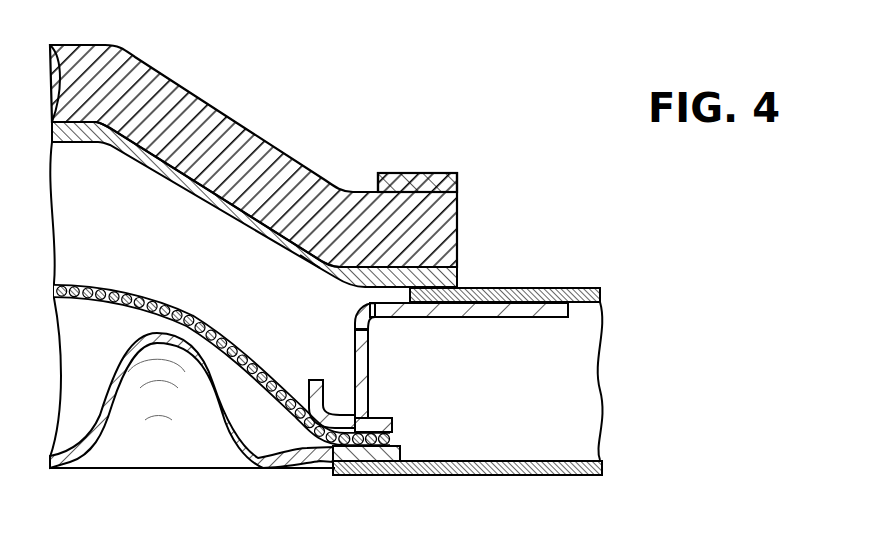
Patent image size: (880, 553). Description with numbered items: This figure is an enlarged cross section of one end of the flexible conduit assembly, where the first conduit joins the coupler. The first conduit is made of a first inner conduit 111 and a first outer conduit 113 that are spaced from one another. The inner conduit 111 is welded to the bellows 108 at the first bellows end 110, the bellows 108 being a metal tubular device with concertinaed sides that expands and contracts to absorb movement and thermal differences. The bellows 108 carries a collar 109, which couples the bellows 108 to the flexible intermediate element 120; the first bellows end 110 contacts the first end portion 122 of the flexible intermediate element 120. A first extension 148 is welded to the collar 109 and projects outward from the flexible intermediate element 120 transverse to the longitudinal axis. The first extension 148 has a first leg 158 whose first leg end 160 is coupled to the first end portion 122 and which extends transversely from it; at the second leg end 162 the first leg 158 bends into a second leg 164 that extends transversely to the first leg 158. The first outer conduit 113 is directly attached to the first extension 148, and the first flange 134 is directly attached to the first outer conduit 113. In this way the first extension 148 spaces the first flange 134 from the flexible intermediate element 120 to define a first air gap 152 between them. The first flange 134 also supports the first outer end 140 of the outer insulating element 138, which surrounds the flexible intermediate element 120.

The bellows 108 is at (212, 412).
The collar 109 is at (380, 416).
The first bellows end 110 is at (370, 455).
The first inner conduit 111 is at (500, 476).
The first outer conduit 113 is at (585, 290).
The flexible intermediate element 120 is at (122, 287).
The first end portion 122 is at (394, 430).
The first flange 134 is at (249, 262).
The outer insulating element 138 is at (150, 83).
The first outer end 140 is at (404, 210).
The first extension 148 is at (402, 352).
The first air gap 152 is at (310, 178).
The first leg 158 is at (357, 377).
The first leg end 160 is at (358, 438).
The second leg end 162 is at (370, 322).
The second leg 164 is at (516, 311).